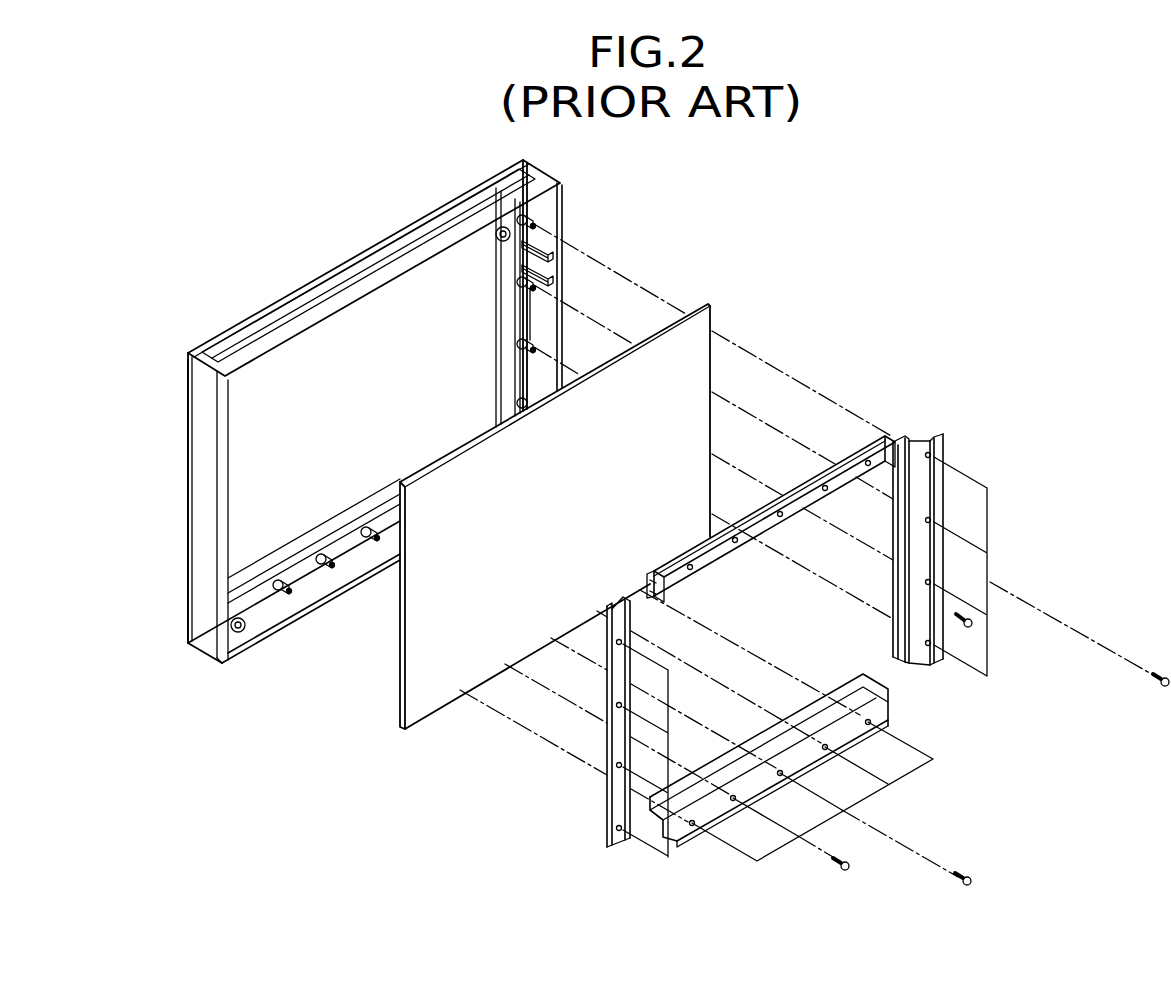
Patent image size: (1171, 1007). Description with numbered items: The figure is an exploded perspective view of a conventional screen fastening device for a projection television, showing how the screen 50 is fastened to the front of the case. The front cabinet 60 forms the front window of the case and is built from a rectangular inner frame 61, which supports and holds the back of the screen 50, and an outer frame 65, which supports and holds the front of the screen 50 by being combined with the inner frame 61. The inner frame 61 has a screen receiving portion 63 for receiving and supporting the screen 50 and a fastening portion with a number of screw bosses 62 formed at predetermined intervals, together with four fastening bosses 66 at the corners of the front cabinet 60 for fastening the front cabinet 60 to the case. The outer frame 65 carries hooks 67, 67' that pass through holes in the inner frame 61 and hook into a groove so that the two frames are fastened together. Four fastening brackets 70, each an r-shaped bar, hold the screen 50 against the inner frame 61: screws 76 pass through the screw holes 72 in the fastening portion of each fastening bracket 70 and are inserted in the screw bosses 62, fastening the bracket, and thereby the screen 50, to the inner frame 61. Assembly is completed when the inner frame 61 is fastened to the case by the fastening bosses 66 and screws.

The screen 50 is at (695, 350).
The front cabinet 60 is at (406, 403).
The inner frame 61 is at (404, 250).
The screw bosses 62 is at (532, 284).
The screen receiving portion 63 is at (248, 577).
The outer frame 65 is at (188, 386).
The fastening bosses 66 is at (531, 225).
The hook 67 is at (608, 236).
The hook 67' is at (611, 265).
The fastening bracket 70 is at (768, 593).
The screw holes 72 is at (781, 517).
The screws 76 is at (1165, 677).